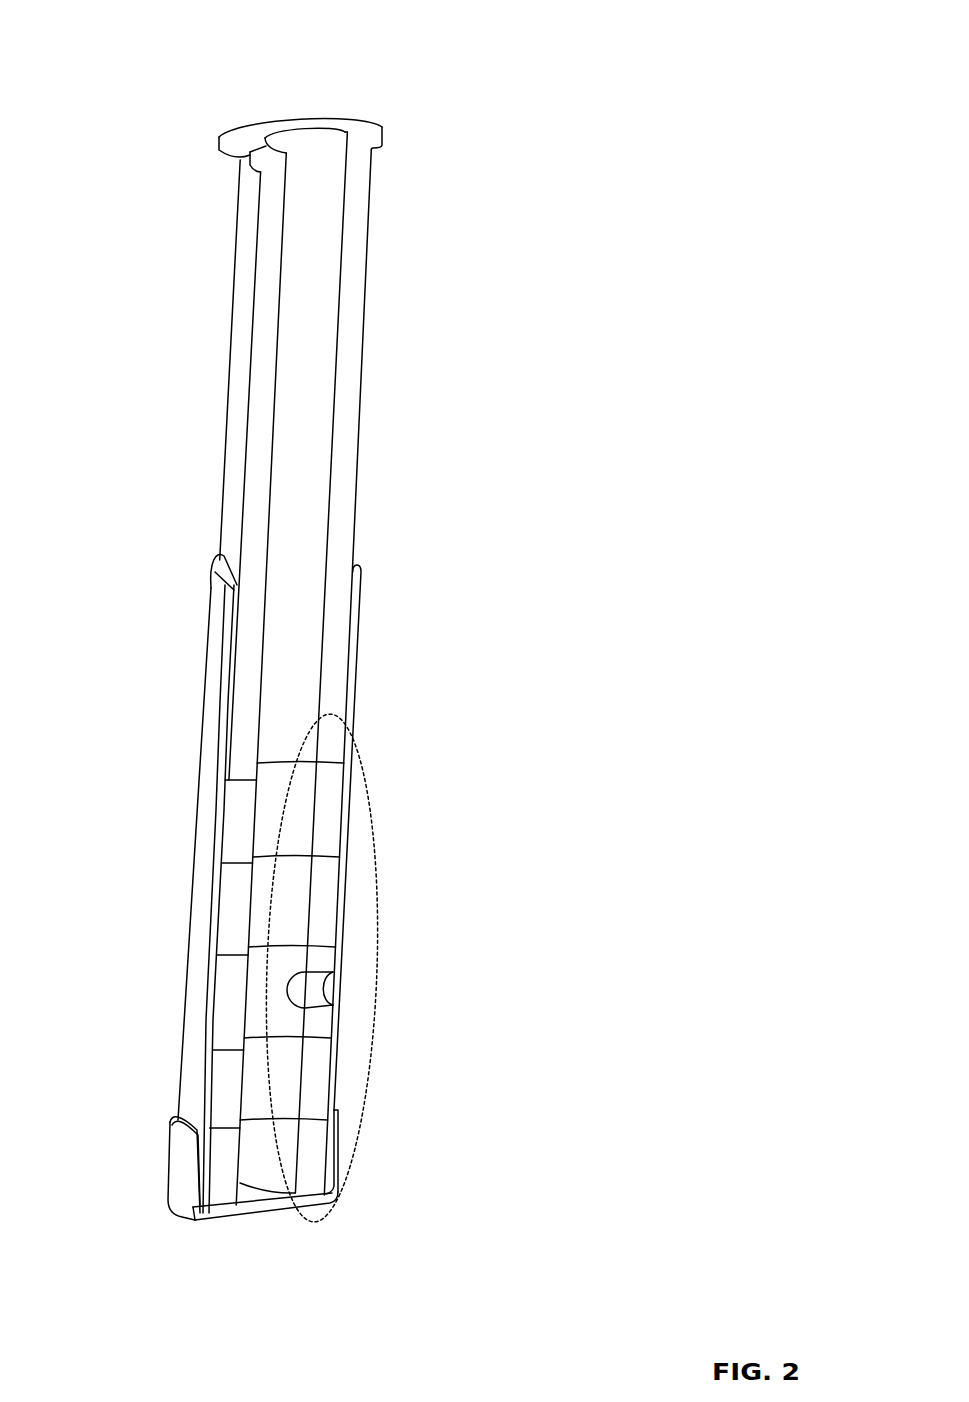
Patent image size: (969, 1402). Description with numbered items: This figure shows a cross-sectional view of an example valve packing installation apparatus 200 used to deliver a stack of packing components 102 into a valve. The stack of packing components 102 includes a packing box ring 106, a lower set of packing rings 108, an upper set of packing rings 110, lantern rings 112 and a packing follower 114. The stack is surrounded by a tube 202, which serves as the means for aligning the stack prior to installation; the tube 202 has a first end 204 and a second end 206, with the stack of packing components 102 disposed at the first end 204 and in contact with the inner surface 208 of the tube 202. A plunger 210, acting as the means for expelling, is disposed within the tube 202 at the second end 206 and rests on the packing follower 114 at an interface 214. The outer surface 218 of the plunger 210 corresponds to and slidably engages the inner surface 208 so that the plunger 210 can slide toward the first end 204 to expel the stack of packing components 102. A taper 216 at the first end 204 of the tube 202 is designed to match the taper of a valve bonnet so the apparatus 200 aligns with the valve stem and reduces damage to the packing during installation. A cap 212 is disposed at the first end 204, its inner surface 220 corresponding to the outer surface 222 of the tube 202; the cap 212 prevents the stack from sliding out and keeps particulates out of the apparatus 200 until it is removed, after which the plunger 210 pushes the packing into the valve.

The valve packing installation apparatus 200 is at (418, 51).
The outer surface 218 is at (370, 272).
The plunger 210 is at (345, 408).
The second end 206 is at (212, 570).
The tube 202 is at (213, 678).
The inner surface 208 is at (352, 645).
The outer surface 222 is at (362, 720).
The interface 214 is at (285, 762).
The packing follower 114 is at (238, 808).
The upper set of packing rings 110 is at (235, 920).
The lantern rings 112 is at (230, 1008).
The lower set of packing rings 108 is at (228, 1092).
The stack of packing components 102 is at (378, 978).
The cap 212 is at (180, 1184).
The taper 216 is at (193, 1208).
The packing box ring 106 is at (222, 1202).
The inner surface 220 is at (263, 1207).
The first end 204 is at (326, 1175).